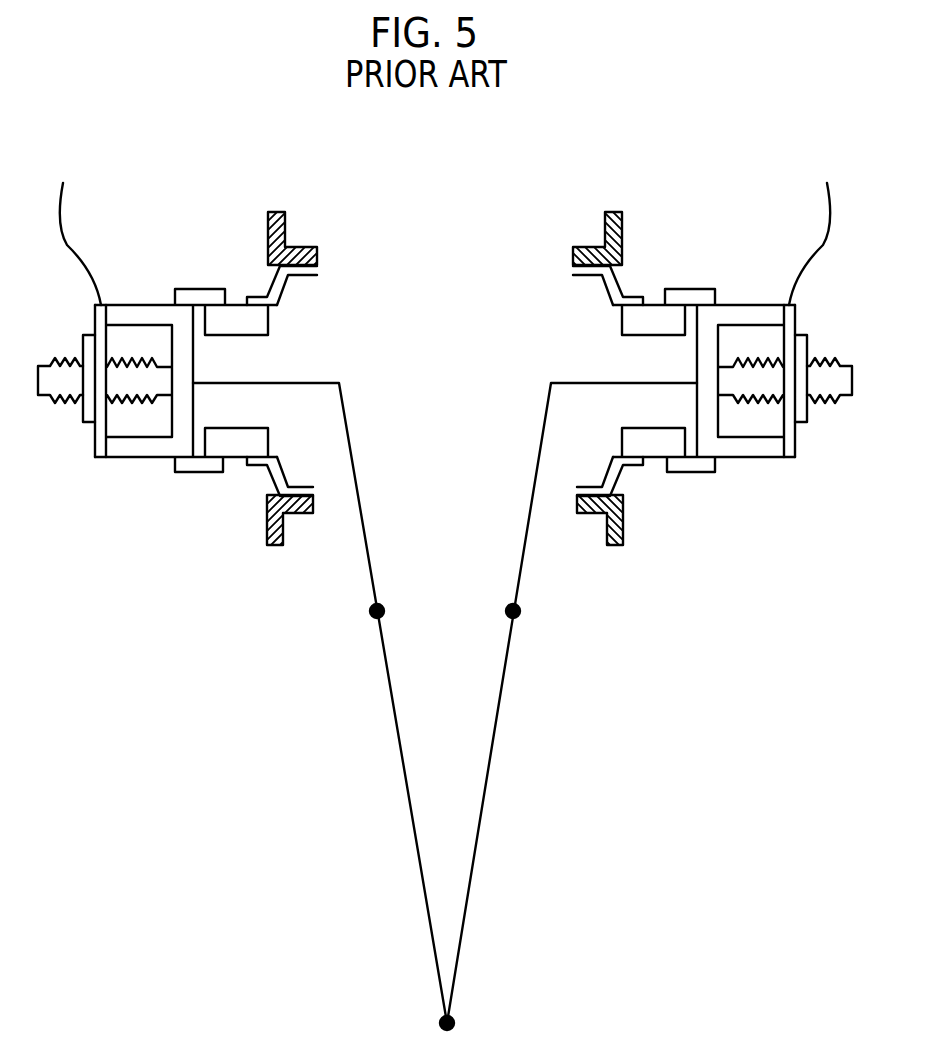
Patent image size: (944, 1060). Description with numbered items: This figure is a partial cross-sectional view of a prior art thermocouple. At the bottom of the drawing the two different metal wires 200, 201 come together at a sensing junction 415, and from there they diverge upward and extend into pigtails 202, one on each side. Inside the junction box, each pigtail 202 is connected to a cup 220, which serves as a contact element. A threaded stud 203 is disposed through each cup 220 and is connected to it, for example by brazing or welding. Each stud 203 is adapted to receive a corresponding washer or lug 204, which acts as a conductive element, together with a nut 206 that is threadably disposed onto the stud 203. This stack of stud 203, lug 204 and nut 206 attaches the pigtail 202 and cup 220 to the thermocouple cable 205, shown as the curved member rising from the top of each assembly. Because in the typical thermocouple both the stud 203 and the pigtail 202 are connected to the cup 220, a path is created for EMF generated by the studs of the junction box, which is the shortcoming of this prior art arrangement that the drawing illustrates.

The metal wire 200 is at (407, 803).
The metal wire 201 is at (484, 803).
The pigtail 202 is at (370, 578).
The threaded stud 203 is at (37, 384).
The washer or lug 204 is at (97, 443).
The thermocouple cable 205 is at (68, 245).
The nut 206 is at (88, 334).
The cup 220 is at (135, 457).
The sensing junction 415 is at (455, 1023).